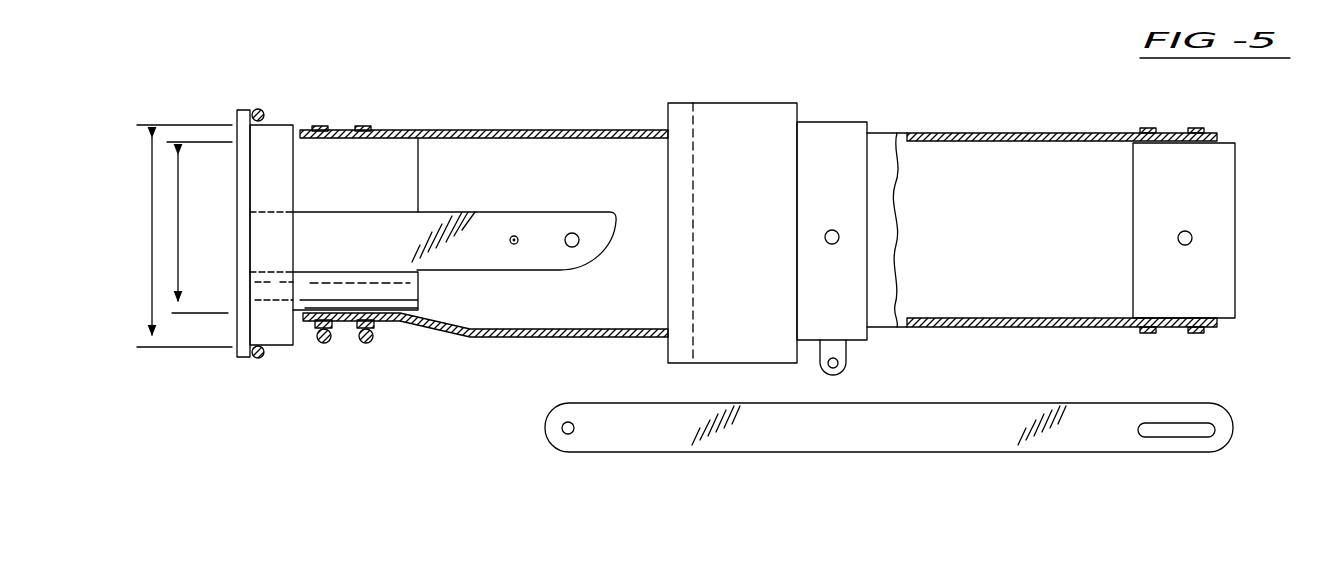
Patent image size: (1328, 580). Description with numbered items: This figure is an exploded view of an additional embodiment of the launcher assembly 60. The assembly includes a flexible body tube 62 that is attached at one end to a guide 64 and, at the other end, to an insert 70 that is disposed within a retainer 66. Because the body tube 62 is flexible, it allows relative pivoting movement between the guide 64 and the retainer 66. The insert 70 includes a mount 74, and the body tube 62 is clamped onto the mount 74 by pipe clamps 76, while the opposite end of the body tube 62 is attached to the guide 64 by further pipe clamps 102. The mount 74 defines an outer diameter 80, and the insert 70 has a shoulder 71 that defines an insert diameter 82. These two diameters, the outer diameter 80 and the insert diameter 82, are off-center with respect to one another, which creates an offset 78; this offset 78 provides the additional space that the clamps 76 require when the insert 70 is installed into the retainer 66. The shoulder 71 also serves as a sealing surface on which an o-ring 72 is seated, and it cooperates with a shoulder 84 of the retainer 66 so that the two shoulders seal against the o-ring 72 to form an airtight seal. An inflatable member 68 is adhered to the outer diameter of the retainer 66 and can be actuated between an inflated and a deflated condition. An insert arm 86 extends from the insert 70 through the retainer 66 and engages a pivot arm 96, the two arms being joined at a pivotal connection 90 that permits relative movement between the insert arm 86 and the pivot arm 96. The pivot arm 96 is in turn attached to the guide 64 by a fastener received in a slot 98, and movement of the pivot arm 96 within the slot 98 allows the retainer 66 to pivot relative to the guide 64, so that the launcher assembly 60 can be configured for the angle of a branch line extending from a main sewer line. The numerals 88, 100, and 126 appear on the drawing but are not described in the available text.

The launcher assembly 60 is at (883, 95).
The body tube 62 is at (1047, 133).
The guide 64 is at (1220, 165).
The retainer 66 is at (827, 133).
The inflatable member 68 is at (745, 120).
The insert 70 is at (279, 150).
The shoulder 71 is at (258, 137).
The o-ring 72 is at (255, 108).
The mount 74 is at (393, 160).
The pipe clamps 76 is at (319, 124).
The offset 78 is at (348, 347).
The outer diameter 80 is at (178, 253).
The insert diameter 82 is at (150, 272).
The shoulder 84 is at (664, 158).
The insert arm 86 is at (486, 230).
The pin hole 88 is at (521, 234).
The pivotal connection 90 is at (579, 231).
The pivot arm 96 is at (935, 418).
The slot 98 is at (1197, 420).
The pivot hole 100 is at (577, 422).
The pipe clamps 102 is at (1148, 341).
The mounting tab 126 is at (845, 353).